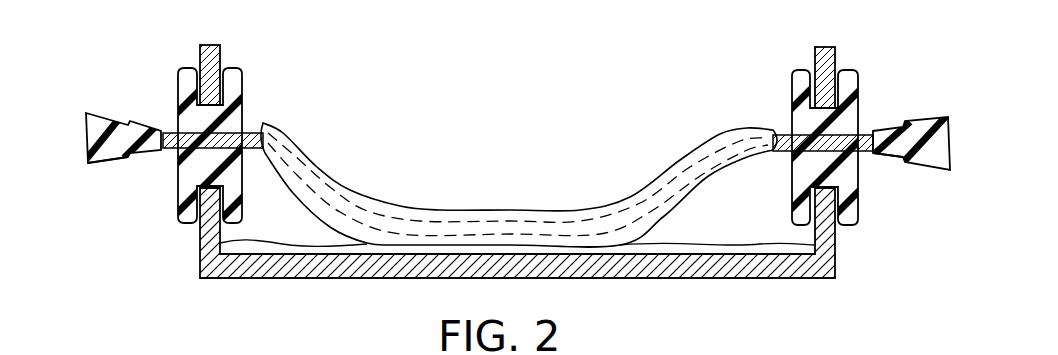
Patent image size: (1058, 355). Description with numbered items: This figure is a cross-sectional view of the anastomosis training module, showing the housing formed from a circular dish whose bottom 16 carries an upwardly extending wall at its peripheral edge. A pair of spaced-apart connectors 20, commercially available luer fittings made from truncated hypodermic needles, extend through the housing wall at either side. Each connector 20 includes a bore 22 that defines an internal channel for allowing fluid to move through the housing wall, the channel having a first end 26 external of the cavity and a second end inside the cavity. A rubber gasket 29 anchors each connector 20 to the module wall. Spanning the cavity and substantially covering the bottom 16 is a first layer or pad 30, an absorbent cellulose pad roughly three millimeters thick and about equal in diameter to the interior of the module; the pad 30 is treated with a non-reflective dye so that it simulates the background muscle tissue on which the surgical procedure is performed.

The bottom 16 is at (408, 278).
The connector 20 is at (109, 161).
The bore 22 is at (172, 150).
The first end 26 is at (88, 128).
The rubber gasket 29 is at (183, 68).
The first layer or pad 30 is at (268, 262).